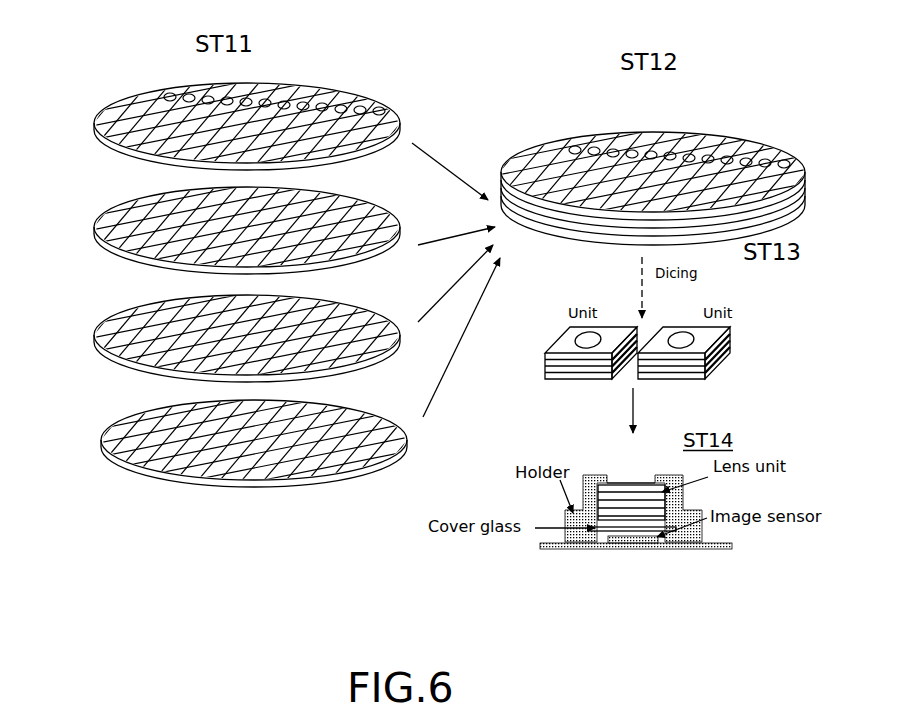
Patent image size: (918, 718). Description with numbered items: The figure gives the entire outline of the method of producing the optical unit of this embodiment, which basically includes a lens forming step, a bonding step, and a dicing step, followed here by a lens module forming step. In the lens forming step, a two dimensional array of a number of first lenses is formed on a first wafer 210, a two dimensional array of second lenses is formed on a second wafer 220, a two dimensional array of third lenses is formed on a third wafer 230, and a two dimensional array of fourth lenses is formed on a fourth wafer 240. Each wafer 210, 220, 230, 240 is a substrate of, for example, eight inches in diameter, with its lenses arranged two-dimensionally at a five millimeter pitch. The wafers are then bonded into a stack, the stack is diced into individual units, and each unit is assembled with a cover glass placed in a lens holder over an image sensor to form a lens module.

The first wafer 210 is at (92, 123).
The second wafer 220 is at (92, 227).
The third wafer 230 is at (92, 335).
The fourth wafer 240 is at (100, 440).